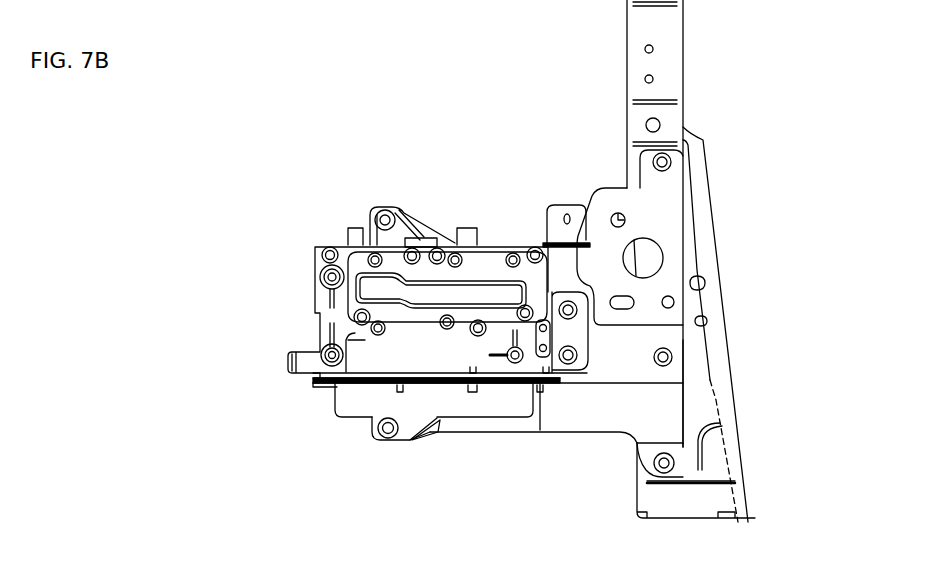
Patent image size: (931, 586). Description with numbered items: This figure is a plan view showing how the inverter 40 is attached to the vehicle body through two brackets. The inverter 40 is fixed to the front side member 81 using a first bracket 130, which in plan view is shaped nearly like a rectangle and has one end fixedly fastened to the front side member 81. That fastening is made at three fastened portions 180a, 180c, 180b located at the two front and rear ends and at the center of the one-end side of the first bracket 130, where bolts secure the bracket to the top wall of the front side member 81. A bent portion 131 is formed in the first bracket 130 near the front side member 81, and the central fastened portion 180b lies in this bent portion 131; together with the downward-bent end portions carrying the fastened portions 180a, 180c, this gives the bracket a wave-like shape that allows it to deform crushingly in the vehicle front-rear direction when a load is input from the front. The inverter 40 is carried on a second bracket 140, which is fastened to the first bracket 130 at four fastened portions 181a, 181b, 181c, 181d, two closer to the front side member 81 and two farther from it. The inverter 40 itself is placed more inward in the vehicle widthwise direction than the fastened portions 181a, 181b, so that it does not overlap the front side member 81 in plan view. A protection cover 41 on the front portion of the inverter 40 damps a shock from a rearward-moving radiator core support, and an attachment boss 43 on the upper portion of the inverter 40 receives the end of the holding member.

The inverter 40 is at (312, 268).
The protection cover 41 is at (352, 404).
The attachment boss 43 is at (538, 365).
The front side member 81 is at (745, 478).
The first bracket 130 is at (464, 433).
The bent portion 131 is at (675, 337).
The second bracket 140 is at (420, 232).
The fastened portion 180a is at (676, 460).
The fastened portion 180b is at (675, 358).
The fastened portion 180c is at (672, 168).
The fastened portion 181a is at (580, 358).
The fastened portion 181b is at (574, 338).
The fastened portion 181c is at (388, 440).
The fastened portion 181d is at (388, 206).